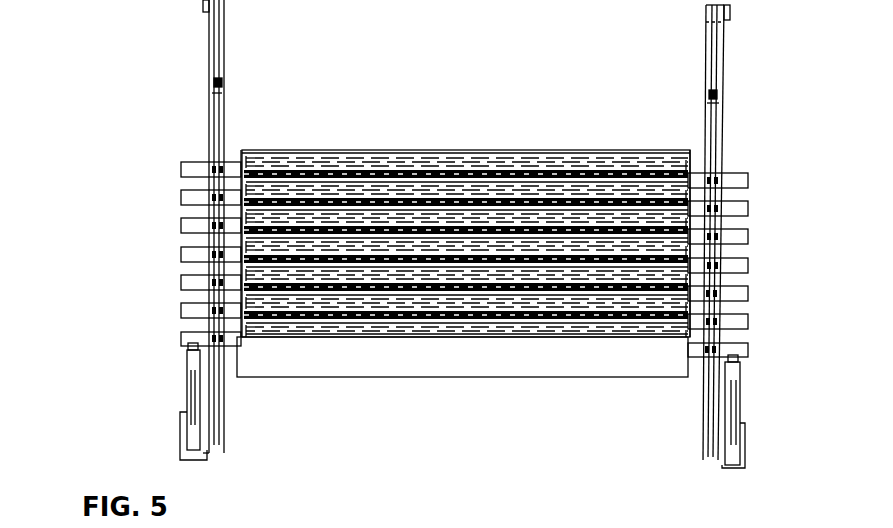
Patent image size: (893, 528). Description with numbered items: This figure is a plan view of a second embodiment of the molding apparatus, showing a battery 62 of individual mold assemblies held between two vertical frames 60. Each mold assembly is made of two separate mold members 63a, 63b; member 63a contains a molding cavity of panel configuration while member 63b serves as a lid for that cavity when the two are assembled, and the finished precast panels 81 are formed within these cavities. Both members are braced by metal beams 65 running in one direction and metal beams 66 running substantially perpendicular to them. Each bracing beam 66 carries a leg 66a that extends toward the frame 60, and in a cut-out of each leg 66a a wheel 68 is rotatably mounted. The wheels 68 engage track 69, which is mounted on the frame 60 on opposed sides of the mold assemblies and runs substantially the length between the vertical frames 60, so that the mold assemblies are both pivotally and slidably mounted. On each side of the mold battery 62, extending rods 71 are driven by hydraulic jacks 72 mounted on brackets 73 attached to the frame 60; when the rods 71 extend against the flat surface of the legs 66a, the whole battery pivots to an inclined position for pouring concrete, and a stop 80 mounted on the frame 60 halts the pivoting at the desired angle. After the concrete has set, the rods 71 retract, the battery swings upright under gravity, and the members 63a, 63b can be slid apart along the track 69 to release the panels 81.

The vertical frame 60 is at (205, 7).
The battery of mold assemblies 62 is at (72, 347).
The mold member 63a is at (370, 178).
The mold member 63b is at (393, 173).
The metal beams 65 is at (333, 237).
The metal beams 66 is at (243, 151).
The leg 66a is at (190, 201).
The wheel 68 is at (712, 320).
The track 69 is at (213, 107).
The extending rods 71 is at (187, 350).
The hydraulic jacks 72 is at (185, 425).
The brackets 73 is at (180, 451).
The stop 80 is at (224, 84).
The precast panels 81 is at (687, 250).